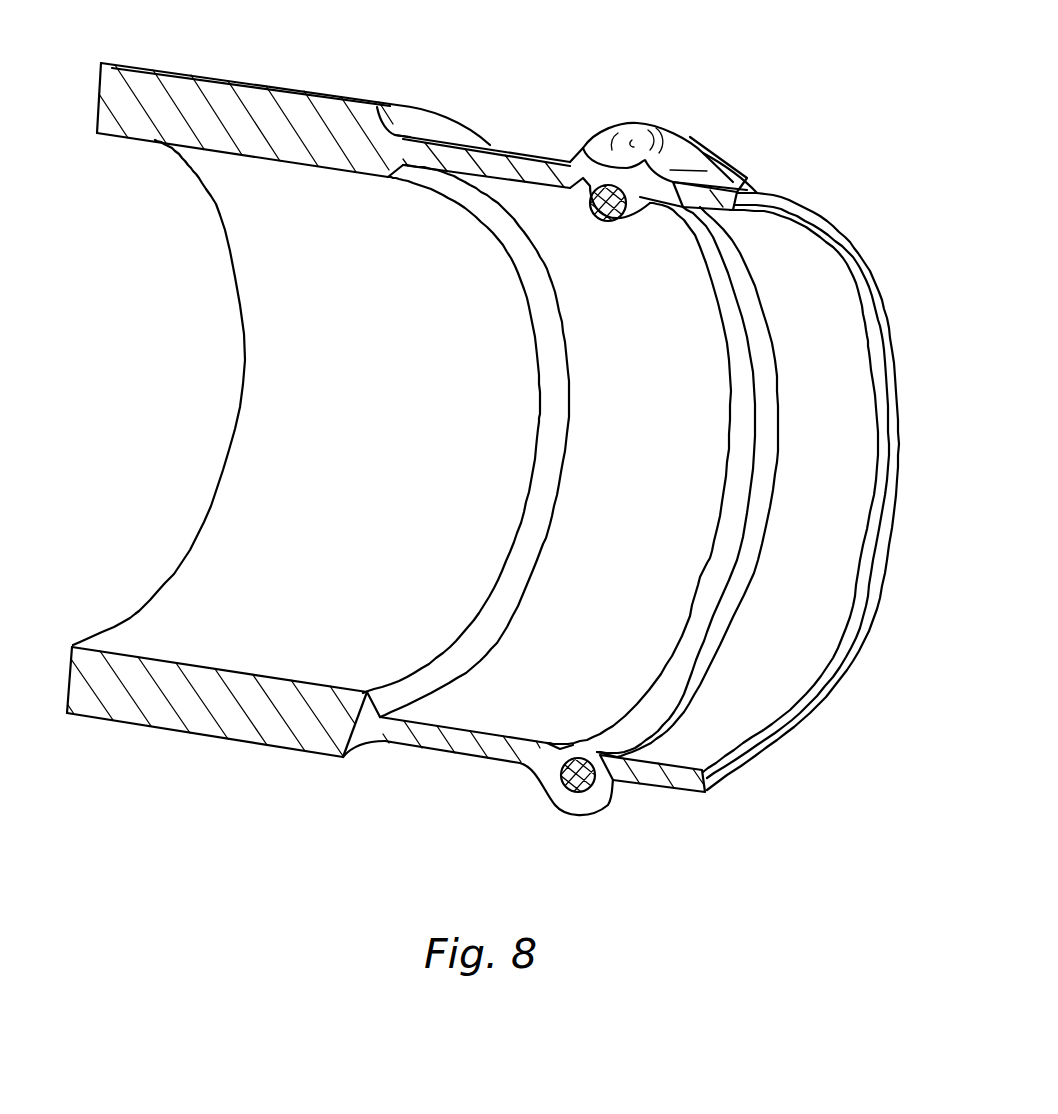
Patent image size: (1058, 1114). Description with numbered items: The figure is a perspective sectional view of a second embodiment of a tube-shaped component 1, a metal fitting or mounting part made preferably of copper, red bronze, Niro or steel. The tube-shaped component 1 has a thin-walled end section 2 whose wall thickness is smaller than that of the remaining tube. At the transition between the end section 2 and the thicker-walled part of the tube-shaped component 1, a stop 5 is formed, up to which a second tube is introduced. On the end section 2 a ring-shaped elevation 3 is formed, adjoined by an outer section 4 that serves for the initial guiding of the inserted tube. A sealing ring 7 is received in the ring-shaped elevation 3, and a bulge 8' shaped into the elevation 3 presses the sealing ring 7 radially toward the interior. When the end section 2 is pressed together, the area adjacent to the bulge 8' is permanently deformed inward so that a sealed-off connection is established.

The tube-shaped component 1 is at (262, 530).
The end section 2 is at (810, 218).
The ring-shaped elevation 3 is at (720, 168).
The outer section 4 is at (737, 742).
The stop 5 is at (383, 698).
The sealing ring 7 is at (580, 777).
The bulge 8' is at (670, 110).